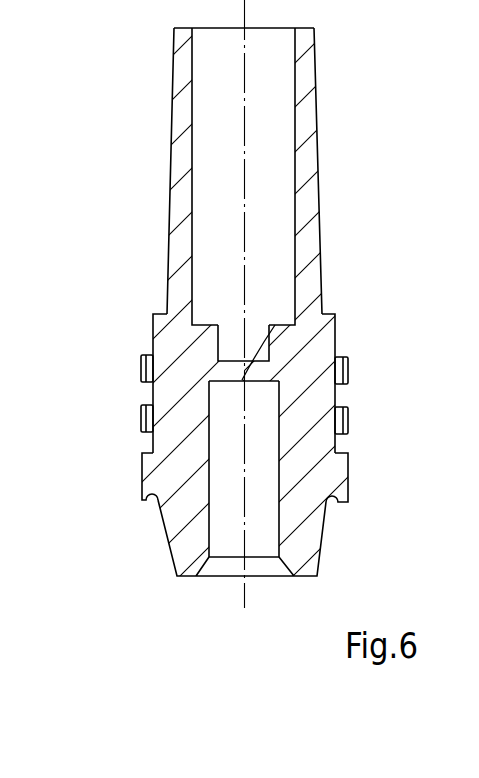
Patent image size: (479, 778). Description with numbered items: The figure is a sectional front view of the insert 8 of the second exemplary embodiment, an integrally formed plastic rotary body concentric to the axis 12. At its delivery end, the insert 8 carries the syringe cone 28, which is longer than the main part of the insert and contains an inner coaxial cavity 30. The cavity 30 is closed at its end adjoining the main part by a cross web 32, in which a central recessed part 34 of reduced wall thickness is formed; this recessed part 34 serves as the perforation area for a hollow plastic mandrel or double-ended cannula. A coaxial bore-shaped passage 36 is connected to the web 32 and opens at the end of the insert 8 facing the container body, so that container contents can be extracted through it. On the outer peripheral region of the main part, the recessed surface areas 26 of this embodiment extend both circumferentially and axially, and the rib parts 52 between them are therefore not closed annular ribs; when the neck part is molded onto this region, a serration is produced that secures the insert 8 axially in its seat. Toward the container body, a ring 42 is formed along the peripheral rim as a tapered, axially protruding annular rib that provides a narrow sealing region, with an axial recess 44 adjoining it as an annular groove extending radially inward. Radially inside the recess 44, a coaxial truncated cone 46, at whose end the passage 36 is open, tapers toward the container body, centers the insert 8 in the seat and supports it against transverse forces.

The insert 8 is at (415, 212).
The axis 12 is at (245, 588).
The recessed surface areas 26 is at (153, 337).
The syringe cone 28 is at (303, 63).
The cavity 30 is at (268, 138).
The cross web 32 is at (231, 373).
The recessed part 34 is at (298, 272).
The passage 36 is at (212, 513).
The ring 42 is at (143, 503).
The axial recess 44 is at (332, 505).
The truncated cone 46 is at (325, 565).
The rib parts 52 is at (142, 370).